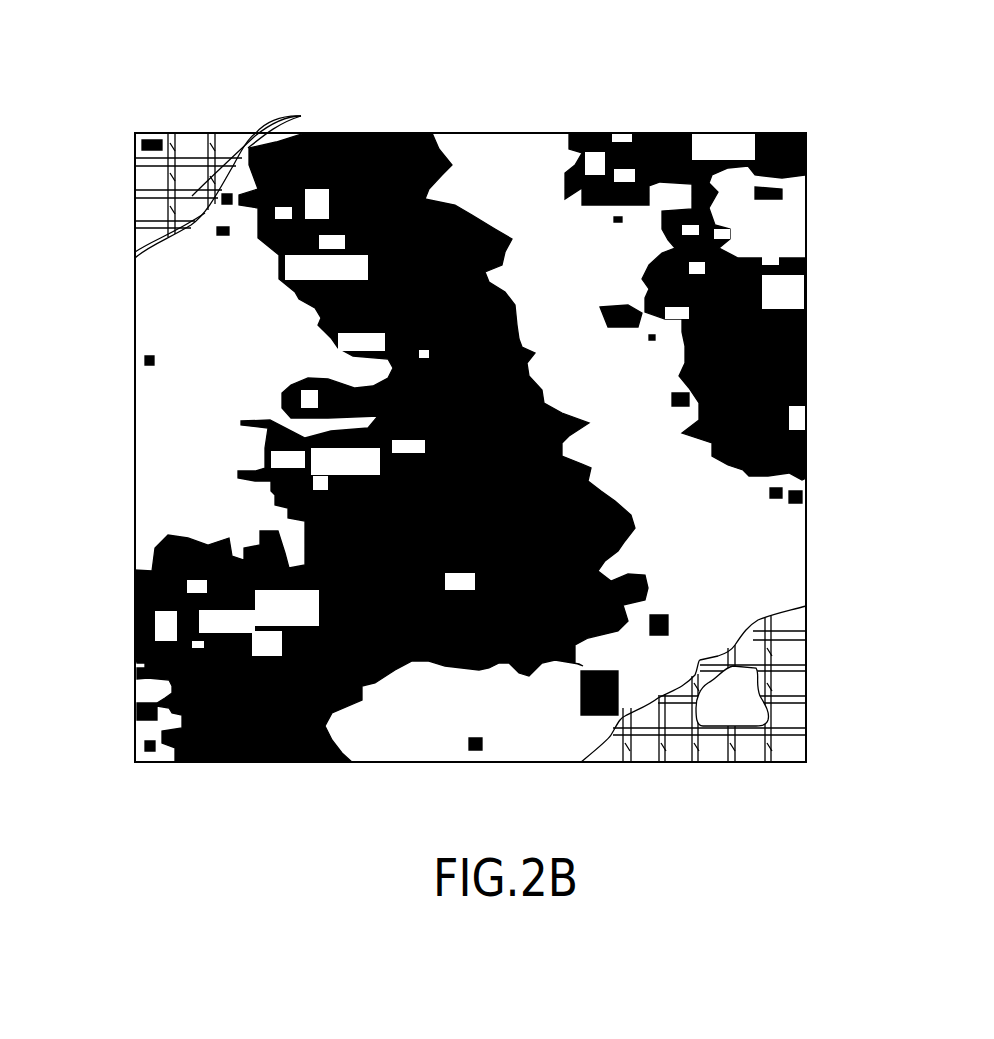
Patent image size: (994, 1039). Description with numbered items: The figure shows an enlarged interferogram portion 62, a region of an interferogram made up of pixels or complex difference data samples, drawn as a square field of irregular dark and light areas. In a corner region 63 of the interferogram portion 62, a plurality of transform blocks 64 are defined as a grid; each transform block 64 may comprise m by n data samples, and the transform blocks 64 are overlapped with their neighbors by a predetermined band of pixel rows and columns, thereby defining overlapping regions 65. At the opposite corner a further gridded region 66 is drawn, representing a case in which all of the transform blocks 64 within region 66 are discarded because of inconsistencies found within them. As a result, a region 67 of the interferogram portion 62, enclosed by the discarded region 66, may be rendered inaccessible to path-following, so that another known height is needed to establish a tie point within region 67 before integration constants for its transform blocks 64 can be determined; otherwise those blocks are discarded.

The interferogram portion 62 is at (806, 322).
The corner region 63 is at (156, 179).
The transform blocks 64 is at (110, 157).
The overlapping regions 65 is at (265, 147).
The discarded-block region 66 is at (785, 613).
The inaccessible region 67 is at (748, 678).